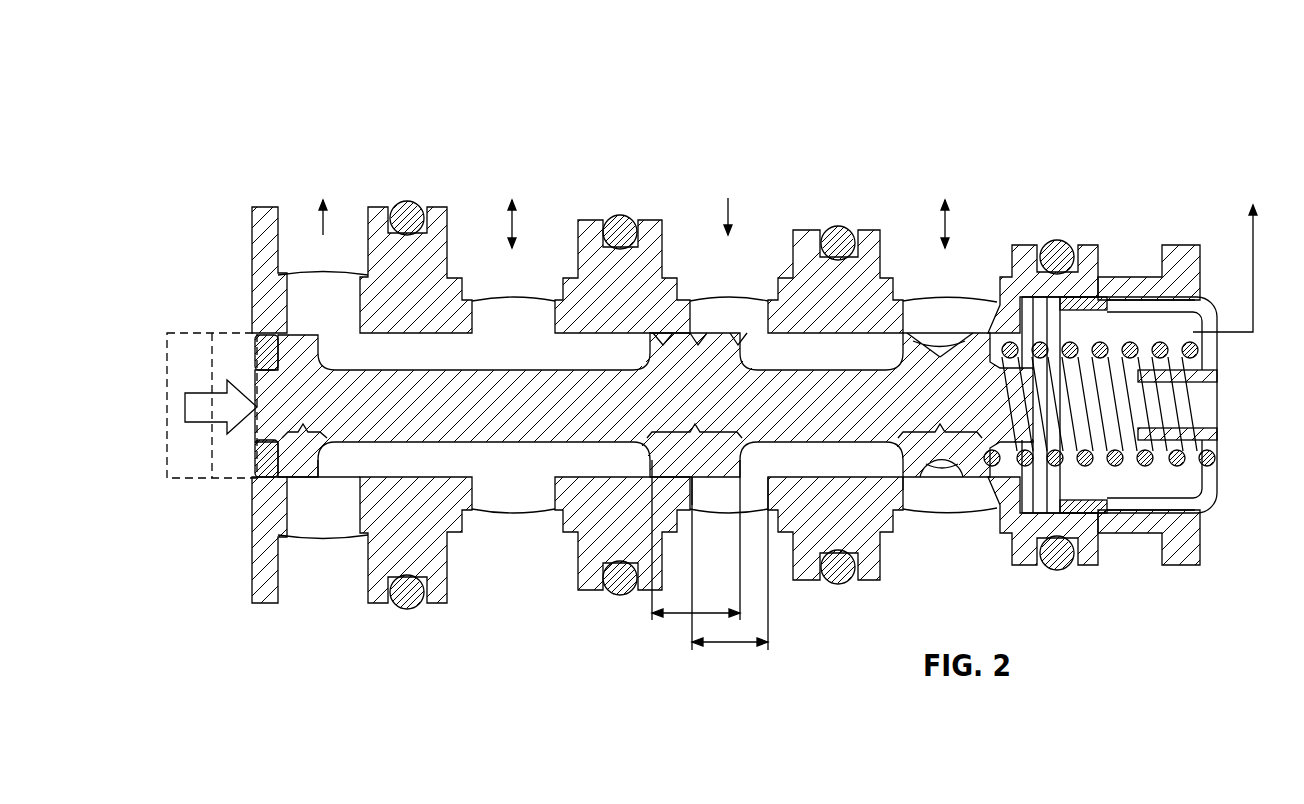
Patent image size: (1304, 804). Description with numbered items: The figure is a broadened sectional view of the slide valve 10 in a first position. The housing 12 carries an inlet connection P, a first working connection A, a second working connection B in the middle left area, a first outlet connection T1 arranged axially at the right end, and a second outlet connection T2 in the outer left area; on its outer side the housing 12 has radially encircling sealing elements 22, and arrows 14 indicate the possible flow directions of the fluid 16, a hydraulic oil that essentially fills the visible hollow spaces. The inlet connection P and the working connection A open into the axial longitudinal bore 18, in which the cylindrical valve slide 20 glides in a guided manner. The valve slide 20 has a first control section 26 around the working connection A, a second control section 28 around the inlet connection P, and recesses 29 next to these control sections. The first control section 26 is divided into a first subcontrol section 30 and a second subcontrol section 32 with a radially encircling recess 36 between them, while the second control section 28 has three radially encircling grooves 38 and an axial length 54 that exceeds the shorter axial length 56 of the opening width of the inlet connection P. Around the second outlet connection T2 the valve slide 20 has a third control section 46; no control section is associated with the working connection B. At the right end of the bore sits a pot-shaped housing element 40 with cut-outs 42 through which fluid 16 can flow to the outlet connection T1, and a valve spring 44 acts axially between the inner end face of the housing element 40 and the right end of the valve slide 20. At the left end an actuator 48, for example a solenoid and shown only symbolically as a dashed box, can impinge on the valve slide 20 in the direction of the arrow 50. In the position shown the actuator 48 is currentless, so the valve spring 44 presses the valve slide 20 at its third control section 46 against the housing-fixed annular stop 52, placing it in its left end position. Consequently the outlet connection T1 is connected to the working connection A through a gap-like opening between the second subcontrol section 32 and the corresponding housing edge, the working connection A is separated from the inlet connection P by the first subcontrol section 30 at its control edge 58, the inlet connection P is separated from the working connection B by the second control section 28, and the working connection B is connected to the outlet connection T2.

The slide valve 10 is at (727, 357).
The housing 12 is at (1177, 262).
The arrows 14 is at (1254, 222).
The fluid 16 is at (590, 462).
The axial longitudinal bore 18 is at (437, 462).
The valve slide 20 is at (487, 417).
The sealing elements 22 is at (1055, 246).
The first control section 26 is at (940, 418).
The second control section 28 is at (694, 418).
The recesses 29 is at (733, 497).
The first subcontrol section 30 is at (907, 337).
The second subcontrol section 32 is at (968, 340).
The recess 36 is at (940, 460).
The grooves 38 is at (740, 348).
The housing element 40 is at (1182, 431).
The cut-outs 42 is at (1147, 505).
The valve spring 44 is at (1150, 467).
The third control section 46 is at (304, 418).
The actuator 48 is at (188, 357).
The arrow 50 is at (198, 412).
The annular stop 52 is at (257, 352).
The axial length 54 is at (678, 618).
The axial length 56 is at (730, 650).
The control edge 58 is at (893, 498).
The first outlet connection T1 is at (1180, 330).
The second outlet connection T2 is at (327, 293).
The first working connection A is at (963, 320).
The second working connection B is at (517, 320).
The inlet connection P is at (733, 320).